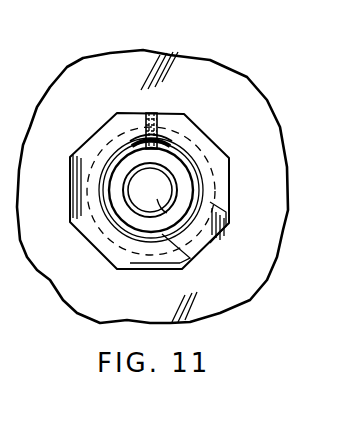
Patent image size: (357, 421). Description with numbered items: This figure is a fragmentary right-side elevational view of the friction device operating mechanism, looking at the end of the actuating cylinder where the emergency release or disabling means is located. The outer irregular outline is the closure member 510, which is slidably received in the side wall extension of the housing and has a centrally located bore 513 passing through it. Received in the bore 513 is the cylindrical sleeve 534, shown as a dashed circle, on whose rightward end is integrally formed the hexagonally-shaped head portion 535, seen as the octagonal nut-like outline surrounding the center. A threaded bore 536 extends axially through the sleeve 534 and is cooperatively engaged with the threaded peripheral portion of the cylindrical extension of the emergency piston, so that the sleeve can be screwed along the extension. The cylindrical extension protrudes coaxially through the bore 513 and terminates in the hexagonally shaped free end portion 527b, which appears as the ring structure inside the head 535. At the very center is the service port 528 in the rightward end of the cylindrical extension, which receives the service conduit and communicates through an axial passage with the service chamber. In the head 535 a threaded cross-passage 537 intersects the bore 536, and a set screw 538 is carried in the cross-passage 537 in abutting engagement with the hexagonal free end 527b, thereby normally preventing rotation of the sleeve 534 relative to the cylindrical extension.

The closure member 510 is at (131, 89).
The bore 513 is at (213, 196).
The hexagonally shaped free end portion 527b is at (152, 145).
The service port 528 is at (150, 190).
The cylindrical sleeve 534 is at (114, 244).
The hexagonally-shaped head portion 535 is at (187, 268).
The threaded bore 536 is at (145, 243).
The threaded cross-passage 537 is at (155, 112).
The set screw 538 is at (153, 143).